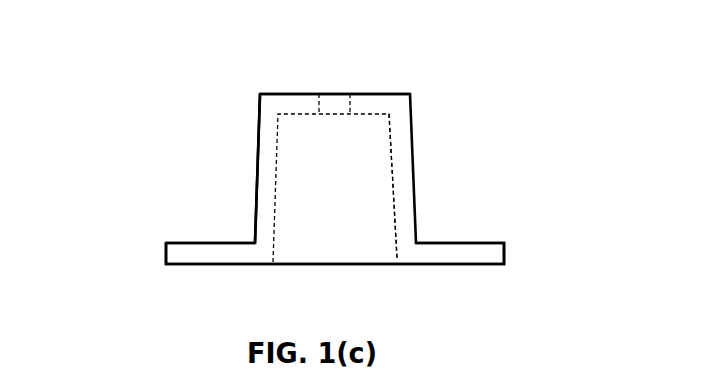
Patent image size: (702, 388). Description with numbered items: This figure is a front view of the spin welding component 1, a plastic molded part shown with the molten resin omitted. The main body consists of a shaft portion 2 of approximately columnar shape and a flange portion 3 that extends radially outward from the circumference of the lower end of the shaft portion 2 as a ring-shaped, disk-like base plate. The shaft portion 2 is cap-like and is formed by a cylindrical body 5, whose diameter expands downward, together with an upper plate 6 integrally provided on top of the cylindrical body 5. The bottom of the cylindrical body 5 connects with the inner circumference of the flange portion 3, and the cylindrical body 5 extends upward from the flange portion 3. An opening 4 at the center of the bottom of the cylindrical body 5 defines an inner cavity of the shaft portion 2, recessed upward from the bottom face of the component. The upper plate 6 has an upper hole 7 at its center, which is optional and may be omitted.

The spin welding component 1 is at (137, 83).
The shaft portion 2 is at (257, 167).
The flange portion 3 is at (465, 257).
The opening 4 is at (303, 262).
The cylindrical body 5 is at (400, 170).
The upper plate 6 is at (378, 94).
The upper hole 7 is at (340, 94).